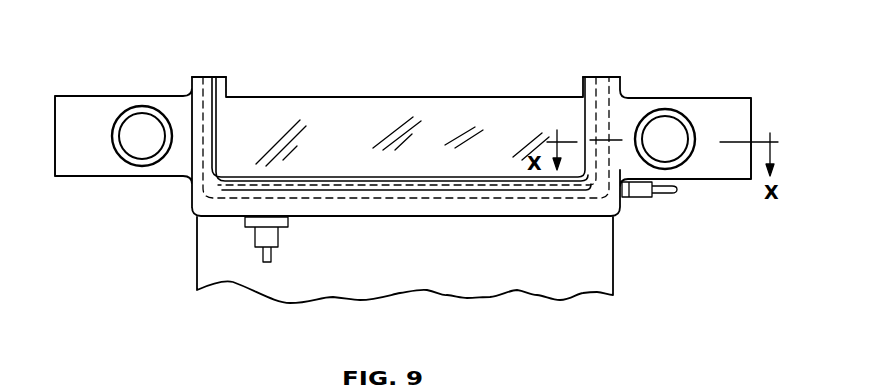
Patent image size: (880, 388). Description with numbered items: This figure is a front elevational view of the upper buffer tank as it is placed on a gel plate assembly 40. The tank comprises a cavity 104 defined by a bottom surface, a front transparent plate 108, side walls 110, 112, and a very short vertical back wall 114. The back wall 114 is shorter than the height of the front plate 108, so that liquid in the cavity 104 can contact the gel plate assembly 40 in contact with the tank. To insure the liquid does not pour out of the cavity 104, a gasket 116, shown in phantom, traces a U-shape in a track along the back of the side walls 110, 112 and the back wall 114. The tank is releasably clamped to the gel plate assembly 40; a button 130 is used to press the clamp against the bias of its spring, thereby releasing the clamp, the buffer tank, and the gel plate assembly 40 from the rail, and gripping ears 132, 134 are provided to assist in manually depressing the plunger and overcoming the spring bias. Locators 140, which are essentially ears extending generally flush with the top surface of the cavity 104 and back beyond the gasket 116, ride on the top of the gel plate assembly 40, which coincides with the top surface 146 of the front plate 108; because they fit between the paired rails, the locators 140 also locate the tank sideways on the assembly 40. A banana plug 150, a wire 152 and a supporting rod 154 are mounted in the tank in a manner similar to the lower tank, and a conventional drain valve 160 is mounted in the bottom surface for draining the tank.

The gel plate assembly 40 is at (456, 266).
The cavity 104 is at (444, 70).
The front transparent plate 108 is at (507, 93).
The side wall 110 is at (588, 118).
The side wall 112 is at (218, 132).
The back wall 114 is at (385, 172).
The gasket 116 is at (615, 73).
The button 130 is at (147, 105).
The gripping ear 132 is at (95, 168).
The gripping ear 134 is at (725, 173).
The locator 140 is at (218, 76).
The top surface of front plate 146 is at (313, 100).
The banana plug 150 is at (662, 193).
The wire 152 is at (452, 182).
The supporting rod 154 is at (490, 185).
The drain valve 160 is at (283, 224).